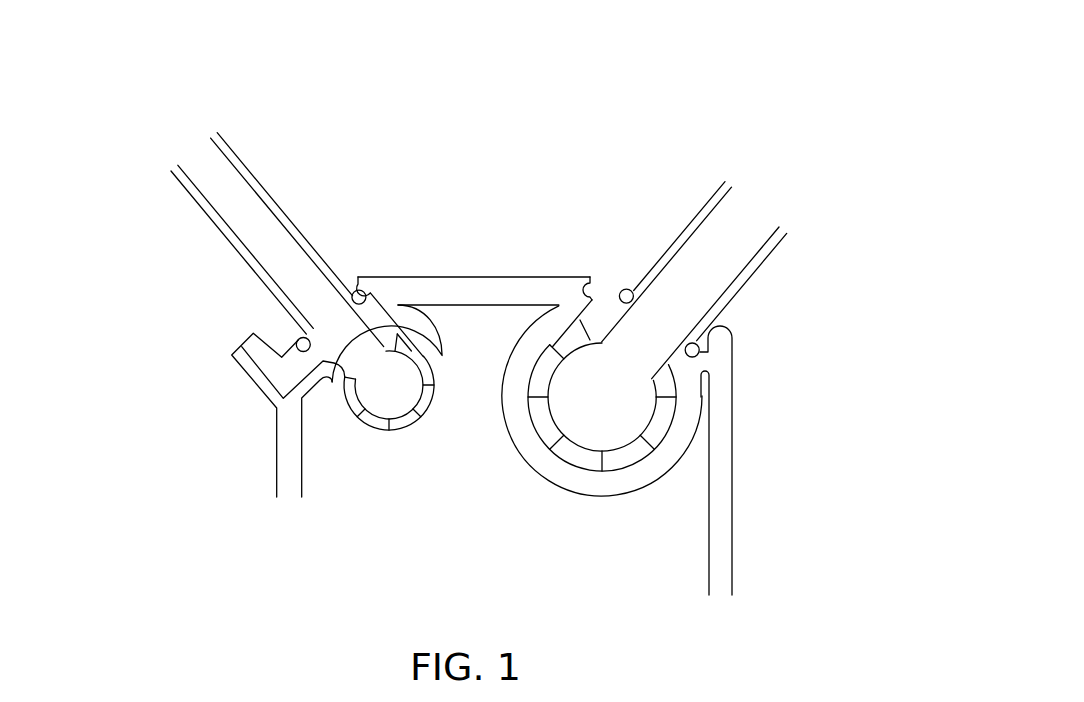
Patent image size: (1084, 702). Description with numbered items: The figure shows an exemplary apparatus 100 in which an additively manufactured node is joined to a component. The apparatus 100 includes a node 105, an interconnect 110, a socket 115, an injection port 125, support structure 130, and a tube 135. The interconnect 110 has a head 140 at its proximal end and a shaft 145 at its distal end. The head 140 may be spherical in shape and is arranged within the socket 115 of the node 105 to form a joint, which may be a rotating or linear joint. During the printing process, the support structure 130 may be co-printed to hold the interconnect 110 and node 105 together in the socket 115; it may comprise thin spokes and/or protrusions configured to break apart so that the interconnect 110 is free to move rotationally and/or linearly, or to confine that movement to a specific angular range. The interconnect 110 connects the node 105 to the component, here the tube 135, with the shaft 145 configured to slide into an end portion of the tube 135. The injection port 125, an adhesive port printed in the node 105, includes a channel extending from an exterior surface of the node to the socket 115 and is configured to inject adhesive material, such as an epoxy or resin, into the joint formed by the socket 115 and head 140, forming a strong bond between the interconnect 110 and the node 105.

The apparatus 100 is at (826, 128).
The node 105 is at (690, 550).
The interconnect 110 is at (745, 281).
The socket 115 is at (605, 308).
The injection port 125 is at (242, 346).
The support structure 130 is at (552, 345).
The tube 135 is at (278, 208).
The head 140 is at (630, 410).
The shaft 145 is at (742, 228).